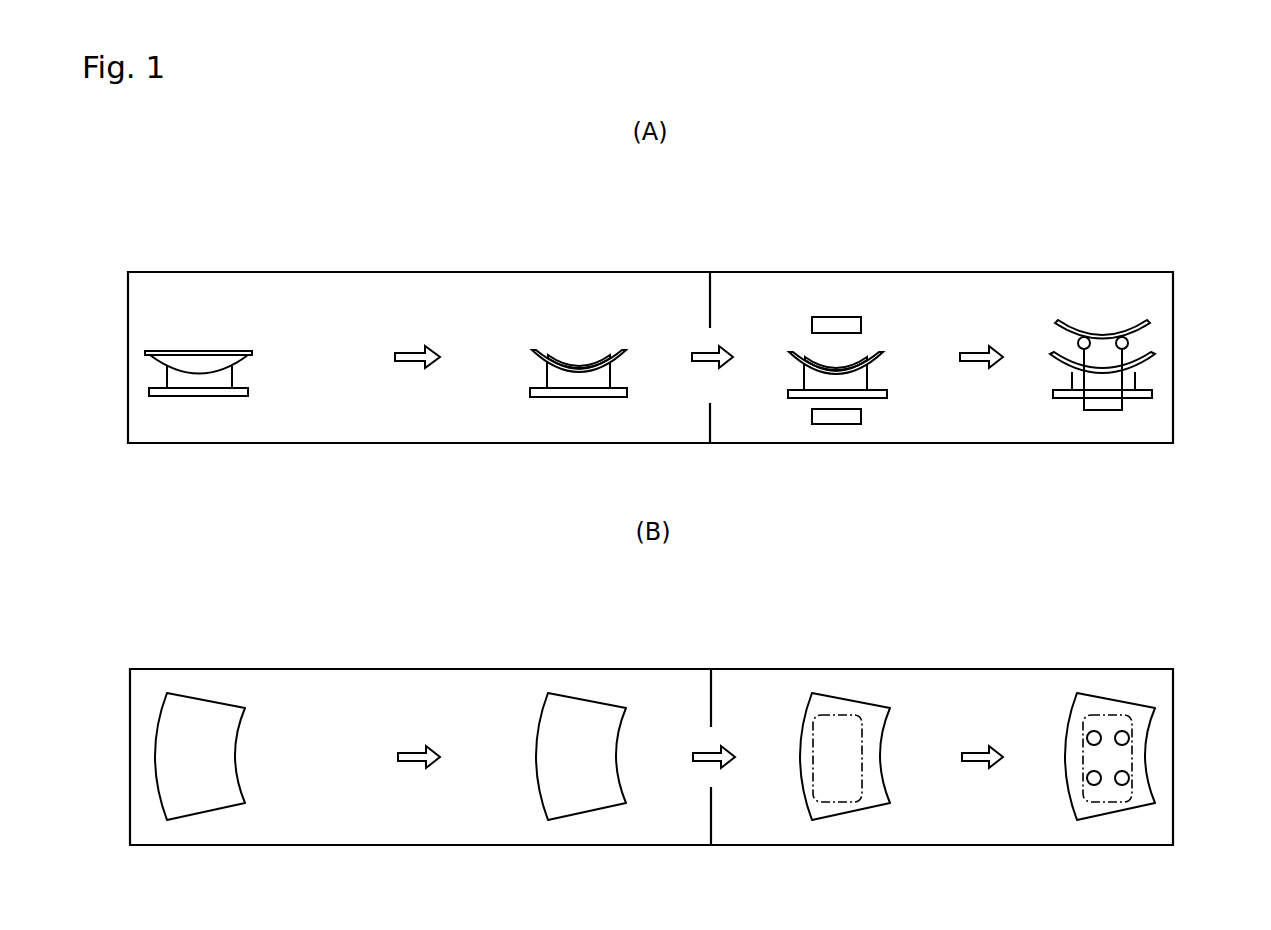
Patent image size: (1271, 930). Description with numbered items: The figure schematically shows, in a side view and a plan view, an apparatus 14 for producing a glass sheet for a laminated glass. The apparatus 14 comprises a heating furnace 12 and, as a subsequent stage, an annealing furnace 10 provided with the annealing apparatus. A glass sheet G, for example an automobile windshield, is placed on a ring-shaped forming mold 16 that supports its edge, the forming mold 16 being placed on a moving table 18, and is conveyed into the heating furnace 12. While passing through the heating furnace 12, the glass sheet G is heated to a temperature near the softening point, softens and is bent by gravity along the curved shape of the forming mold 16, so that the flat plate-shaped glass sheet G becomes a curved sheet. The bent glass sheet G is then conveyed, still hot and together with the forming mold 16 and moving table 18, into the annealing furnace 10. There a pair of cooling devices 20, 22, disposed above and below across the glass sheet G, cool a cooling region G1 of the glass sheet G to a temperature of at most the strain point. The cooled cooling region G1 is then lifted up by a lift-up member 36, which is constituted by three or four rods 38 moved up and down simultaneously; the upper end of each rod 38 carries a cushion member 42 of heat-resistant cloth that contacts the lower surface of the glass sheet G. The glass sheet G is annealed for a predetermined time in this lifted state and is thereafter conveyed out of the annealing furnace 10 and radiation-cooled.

The annealing furnace 10 is at (966, 268).
The heating furnace 12 is at (458, 268).
The apparatus for producing a glass sheet for a laminated glass 14 is at (751, 226).
The forming mold 16 is at (246, 358).
The moving table 18 is at (218, 396).
The cooling device 20 is at (839, 313).
The cooling device 22 is at (846, 430).
The lift-up member 36 is at (1076, 407).
The rod 38 is at (1080, 360).
The cushion member 42 is at (1078, 339).
The glass sheet G is at (203, 350).
The cooling region G1 is at (1101, 333).